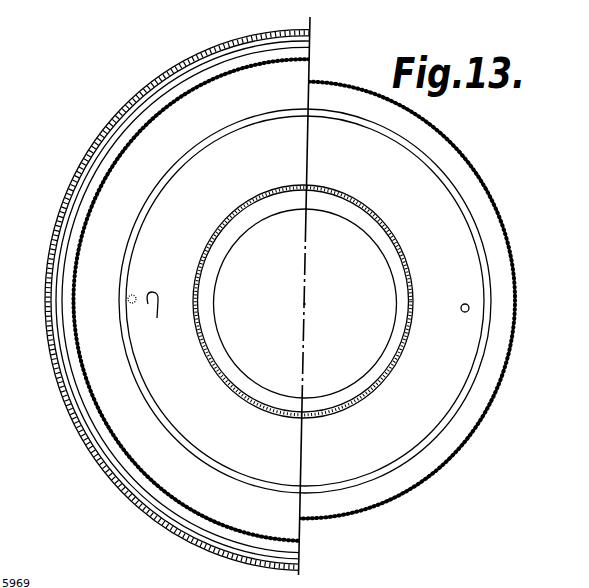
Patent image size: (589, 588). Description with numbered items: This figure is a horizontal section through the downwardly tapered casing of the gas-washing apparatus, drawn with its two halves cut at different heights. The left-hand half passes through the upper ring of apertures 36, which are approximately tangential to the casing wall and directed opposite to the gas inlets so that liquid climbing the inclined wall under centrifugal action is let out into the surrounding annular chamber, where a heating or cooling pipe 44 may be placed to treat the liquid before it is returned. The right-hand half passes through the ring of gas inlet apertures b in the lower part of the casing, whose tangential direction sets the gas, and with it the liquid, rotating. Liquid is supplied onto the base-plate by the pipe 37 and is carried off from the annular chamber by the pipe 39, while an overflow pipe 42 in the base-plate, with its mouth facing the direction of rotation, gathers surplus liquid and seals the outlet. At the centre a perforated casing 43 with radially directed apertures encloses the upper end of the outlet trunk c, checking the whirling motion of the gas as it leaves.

The ring of apertures 36 is at (213, 72).
The heating or cooling pipe 44 is at (105, 473).
The inlet apertures b is at (510, 240).
The pipe 37 is at (465, 304).
The perforated casing 43 is at (200, 258).
The outlet trunk c is at (367, 235).
The pipe 39 is at (136, 293).
The overflow pipe 42 is at (155, 321).